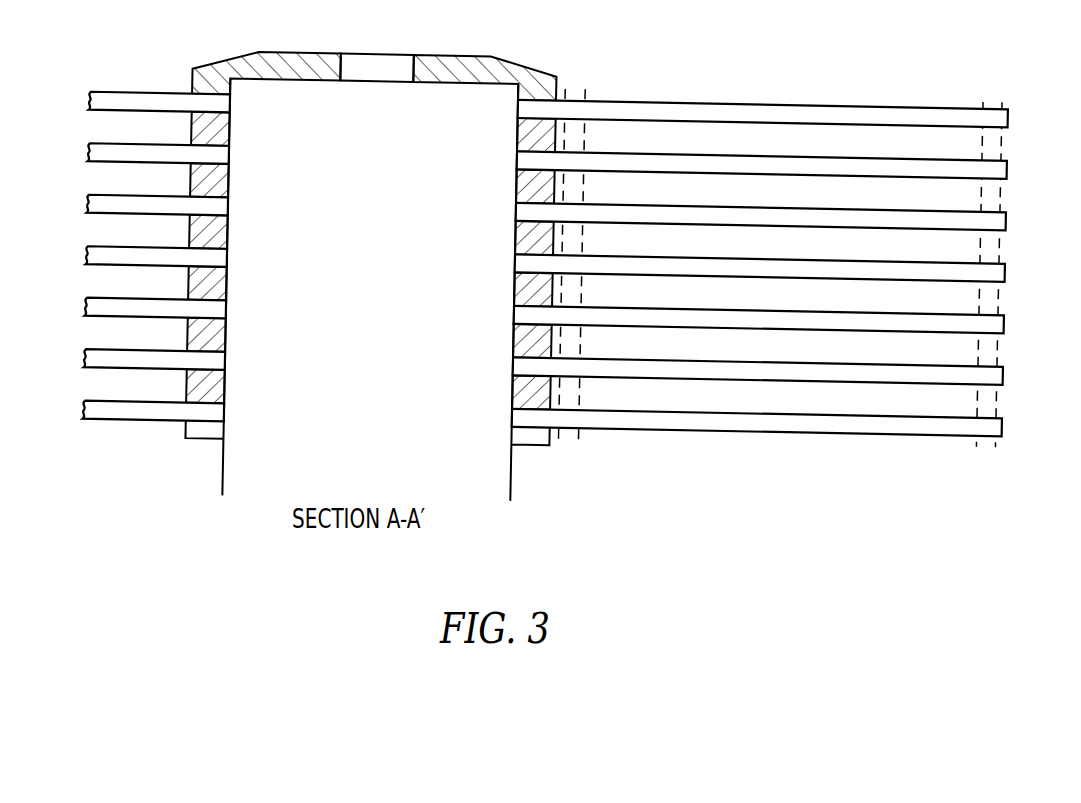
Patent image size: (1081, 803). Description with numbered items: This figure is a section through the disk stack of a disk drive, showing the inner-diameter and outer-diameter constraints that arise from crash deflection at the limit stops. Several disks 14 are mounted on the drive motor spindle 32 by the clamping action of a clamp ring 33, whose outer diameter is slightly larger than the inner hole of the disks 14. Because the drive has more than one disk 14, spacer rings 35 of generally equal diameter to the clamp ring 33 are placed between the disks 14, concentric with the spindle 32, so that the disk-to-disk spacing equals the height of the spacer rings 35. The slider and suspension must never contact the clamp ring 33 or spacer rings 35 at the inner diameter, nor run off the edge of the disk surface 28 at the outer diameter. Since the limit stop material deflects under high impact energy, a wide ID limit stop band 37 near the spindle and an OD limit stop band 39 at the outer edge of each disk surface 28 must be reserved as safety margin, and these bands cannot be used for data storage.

The disk 14 is at (1008, 110).
The disk surface 28 is at (922, 152).
The drive motor spindle 32 is at (519, 480).
The clamp ring 33 is at (519, 63).
The spacer ring 35 is at (560, 136).
The ID limit stop band 37 is at (575, 438).
The OD limit stop band 39 is at (992, 439).